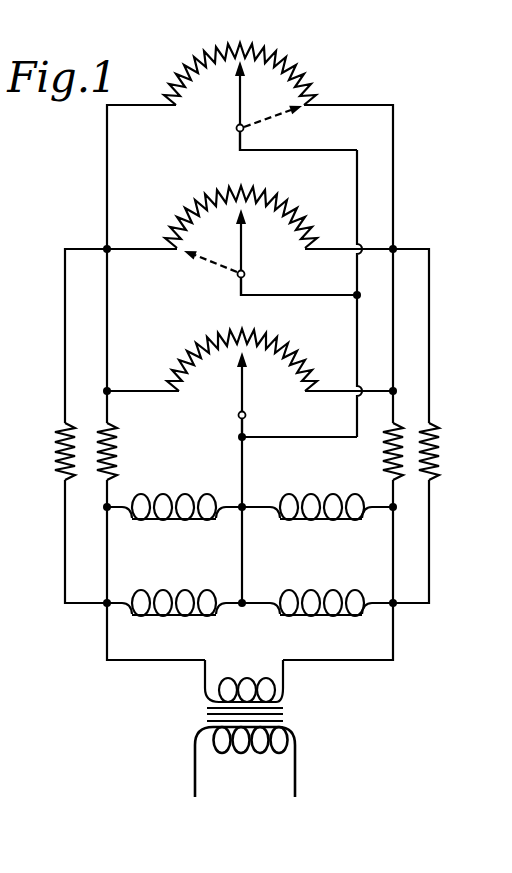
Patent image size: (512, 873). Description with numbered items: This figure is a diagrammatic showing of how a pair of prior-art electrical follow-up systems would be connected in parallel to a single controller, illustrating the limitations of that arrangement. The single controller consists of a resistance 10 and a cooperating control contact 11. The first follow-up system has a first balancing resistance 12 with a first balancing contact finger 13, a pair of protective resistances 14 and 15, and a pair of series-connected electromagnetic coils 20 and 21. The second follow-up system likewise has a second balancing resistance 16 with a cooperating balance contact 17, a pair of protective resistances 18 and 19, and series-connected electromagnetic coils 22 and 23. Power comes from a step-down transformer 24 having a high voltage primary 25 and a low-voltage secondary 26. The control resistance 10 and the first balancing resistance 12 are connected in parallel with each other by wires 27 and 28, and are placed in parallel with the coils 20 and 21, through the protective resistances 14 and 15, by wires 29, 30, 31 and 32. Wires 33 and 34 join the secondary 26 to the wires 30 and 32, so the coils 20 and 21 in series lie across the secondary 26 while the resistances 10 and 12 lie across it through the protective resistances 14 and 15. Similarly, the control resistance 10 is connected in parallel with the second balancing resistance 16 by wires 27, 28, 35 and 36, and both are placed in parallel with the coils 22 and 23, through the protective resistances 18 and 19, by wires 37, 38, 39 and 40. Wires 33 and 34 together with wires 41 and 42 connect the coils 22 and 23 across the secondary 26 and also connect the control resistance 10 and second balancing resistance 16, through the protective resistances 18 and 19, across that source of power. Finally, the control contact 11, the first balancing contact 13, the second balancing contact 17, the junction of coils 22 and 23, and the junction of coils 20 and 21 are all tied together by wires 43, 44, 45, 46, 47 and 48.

The resistance 10 is at (298, 60).
The control contact 11 is at (239, 100).
The first balancing resistance 12 is at (289, 203).
The first balancing contact finger 13 is at (242, 247).
The protective resistance 14 is at (63, 440).
The protective resistance 15 is at (440, 448).
The second balancing resistance 16 is at (283, 340).
The balance contact 17 is at (243, 391).
The protective resistance 18 is at (118, 445).
The protective resistance 19 is at (390, 455).
The electromagnetic coil 20 is at (188, 594).
The electromagnetic coil 21 is at (320, 594).
The electromagnetic coil 22 is at (177, 521).
The electromagnetic coil 23 is at (320, 521).
The step-down transformer 24 is at (289, 713).
The high voltage primary 25 is at (243, 754).
The low-voltage secondary 26 is at (250, 677).
The wire 27 is at (108, 178).
The wire 28 is at (394, 160).
The wire 29 is at (65, 328).
The wire 30 is at (65, 535).
The wire 31 is at (430, 318).
The wire 32 is at (430, 515).
The wire 33 is at (108, 632).
The wire 34 is at (394, 630).
The wire 35 is at (108, 318).
The wire 36 is at (394, 315).
The wire 37 is at (108, 413).
The wire 38 is at (108, 492).
The wire 39 is at (394, 421).
The wire 40 is at (392, 495).
The wire 41 is at (108, 560).
The wire 42 is at (392, 550).
The wire 43 is at (239, 148).
The wire 44 is at (285, 294).
The wire 45 is at (298, 436).
The wire 46 is at (241, 428).
The wire 47 is at (243, 467).
The wire 48 is at (243, 570).